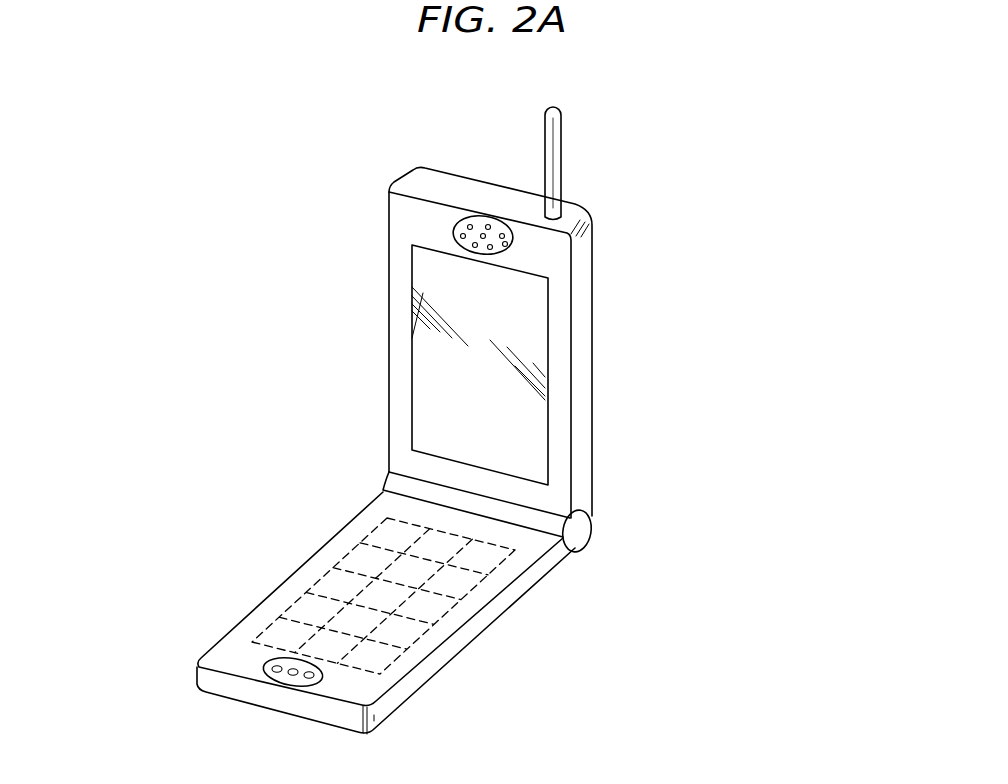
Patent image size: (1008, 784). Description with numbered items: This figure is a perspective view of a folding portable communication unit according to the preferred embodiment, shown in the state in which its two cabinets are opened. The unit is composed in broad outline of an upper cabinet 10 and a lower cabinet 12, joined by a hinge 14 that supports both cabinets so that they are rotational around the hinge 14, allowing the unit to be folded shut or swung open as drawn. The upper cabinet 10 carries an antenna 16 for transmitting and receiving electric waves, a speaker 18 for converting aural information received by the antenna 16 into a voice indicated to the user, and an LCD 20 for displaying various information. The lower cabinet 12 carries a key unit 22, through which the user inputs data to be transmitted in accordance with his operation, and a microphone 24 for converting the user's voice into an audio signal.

The upper cabinet 10 is at (583, 368).
The lower cabinet 12 is at (470, 635).
The hinge 14 is at (580, 530).
The antenna 16 is at (561, 163).
The speaker 18 is at (481, 224).
The LCD 20 is at (427, 380).
The key unit 22 is at (338, 563).
The microphone 24 is at (265, 658).